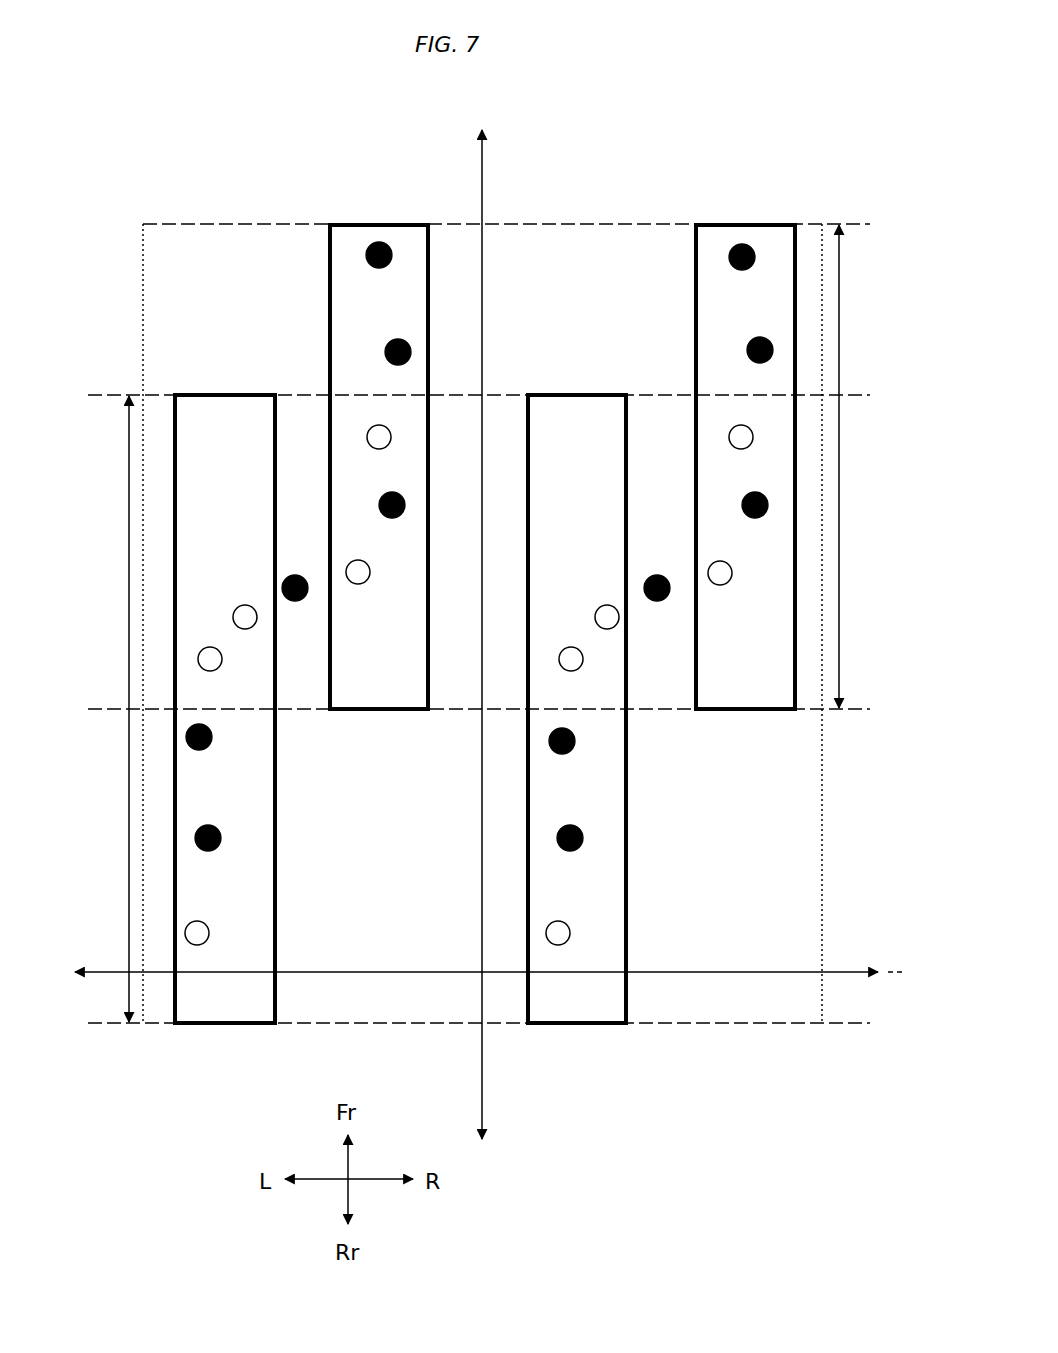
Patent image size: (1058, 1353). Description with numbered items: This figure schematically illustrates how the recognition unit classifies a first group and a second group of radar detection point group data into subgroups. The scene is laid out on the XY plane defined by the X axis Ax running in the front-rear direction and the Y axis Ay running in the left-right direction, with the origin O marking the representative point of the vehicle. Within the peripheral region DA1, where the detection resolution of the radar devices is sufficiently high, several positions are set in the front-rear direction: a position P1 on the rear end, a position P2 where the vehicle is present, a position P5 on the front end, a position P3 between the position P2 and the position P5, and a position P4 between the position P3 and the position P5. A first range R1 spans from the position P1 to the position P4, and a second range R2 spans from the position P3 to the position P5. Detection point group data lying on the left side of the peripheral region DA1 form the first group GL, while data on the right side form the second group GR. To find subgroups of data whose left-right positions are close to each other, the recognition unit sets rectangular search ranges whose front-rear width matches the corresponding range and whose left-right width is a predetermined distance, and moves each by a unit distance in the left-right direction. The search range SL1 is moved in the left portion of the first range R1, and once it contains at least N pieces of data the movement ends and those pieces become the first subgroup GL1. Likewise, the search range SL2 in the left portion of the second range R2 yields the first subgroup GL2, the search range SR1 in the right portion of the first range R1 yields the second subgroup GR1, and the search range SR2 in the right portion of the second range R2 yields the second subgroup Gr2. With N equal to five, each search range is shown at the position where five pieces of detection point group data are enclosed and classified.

The X axis Ax is at (483, 172).
The Y axis Ay is at (110, 973).
The origin O is at (483, 992).
The peripheral region DA1 is at (573, 218).
The position on rear end P1 is at (497, 1025).
The position where the vehicle is present P2 is at (504, 974).
The position between position P2 and position P5 P3 is at (496, 711).
The position between position P3 and position P5 P4 is at (496, 396).
The position on front end P5 is at (523, 225).
The first range R1 is at (129, 528).
The second range R2 is at (840, 515).
The search range SL1 is at (185, 1025).
The search range SL2 is at (381, 225).
The search range SR1 is at (608, 1025).
The search range SR2 is at (752, 225).
The first group GL is at (295, 540).
The second group GR is at (673, 628).
The first subgroup GL1 is at (238, 805).
The first subgroup GL2 is at (352, 424).
The second subgroup GR1 is at (598, 805).
The second subgroup Gr2 is at (716, 424).